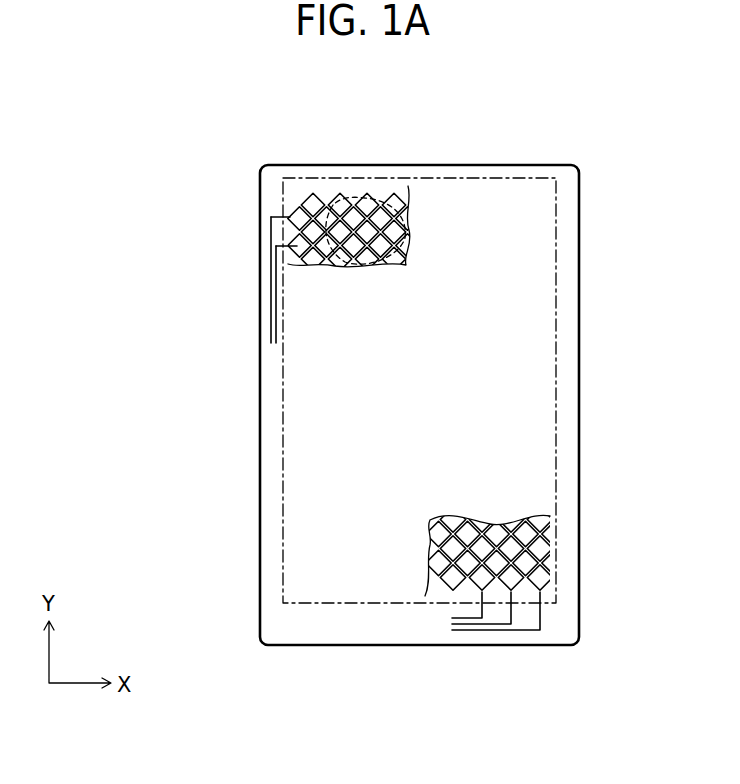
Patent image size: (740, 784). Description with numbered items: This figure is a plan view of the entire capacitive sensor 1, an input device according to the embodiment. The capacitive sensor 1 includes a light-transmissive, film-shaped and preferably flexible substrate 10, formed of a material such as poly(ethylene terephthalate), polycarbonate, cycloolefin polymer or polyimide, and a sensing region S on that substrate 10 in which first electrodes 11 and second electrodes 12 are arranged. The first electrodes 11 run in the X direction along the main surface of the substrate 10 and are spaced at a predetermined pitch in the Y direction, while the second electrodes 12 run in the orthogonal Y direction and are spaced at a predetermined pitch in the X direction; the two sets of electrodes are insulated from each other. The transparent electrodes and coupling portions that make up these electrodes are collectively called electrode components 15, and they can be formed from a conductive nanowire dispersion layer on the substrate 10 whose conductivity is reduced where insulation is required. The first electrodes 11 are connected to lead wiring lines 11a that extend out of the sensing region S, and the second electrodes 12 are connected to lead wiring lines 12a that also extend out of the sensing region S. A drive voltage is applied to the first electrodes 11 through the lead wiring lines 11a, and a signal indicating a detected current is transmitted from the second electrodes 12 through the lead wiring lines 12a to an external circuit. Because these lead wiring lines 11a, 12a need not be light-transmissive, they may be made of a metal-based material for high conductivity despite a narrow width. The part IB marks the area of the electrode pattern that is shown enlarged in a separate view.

The capacitive sensor 1 is at (596, 149).
The substrate 10 is at (302, 646).
The sensing region S is at (556, 341).
The first electrodes 11 is at (298, 215).
The second electrodes 12 is at (313, 195).
The lead wiring lines 11a is at (271, 260).
The lead wiring lines 12a is at (463, 632).
The electrode components 15 is at (279, 206).
The part IB is at (365, 202).